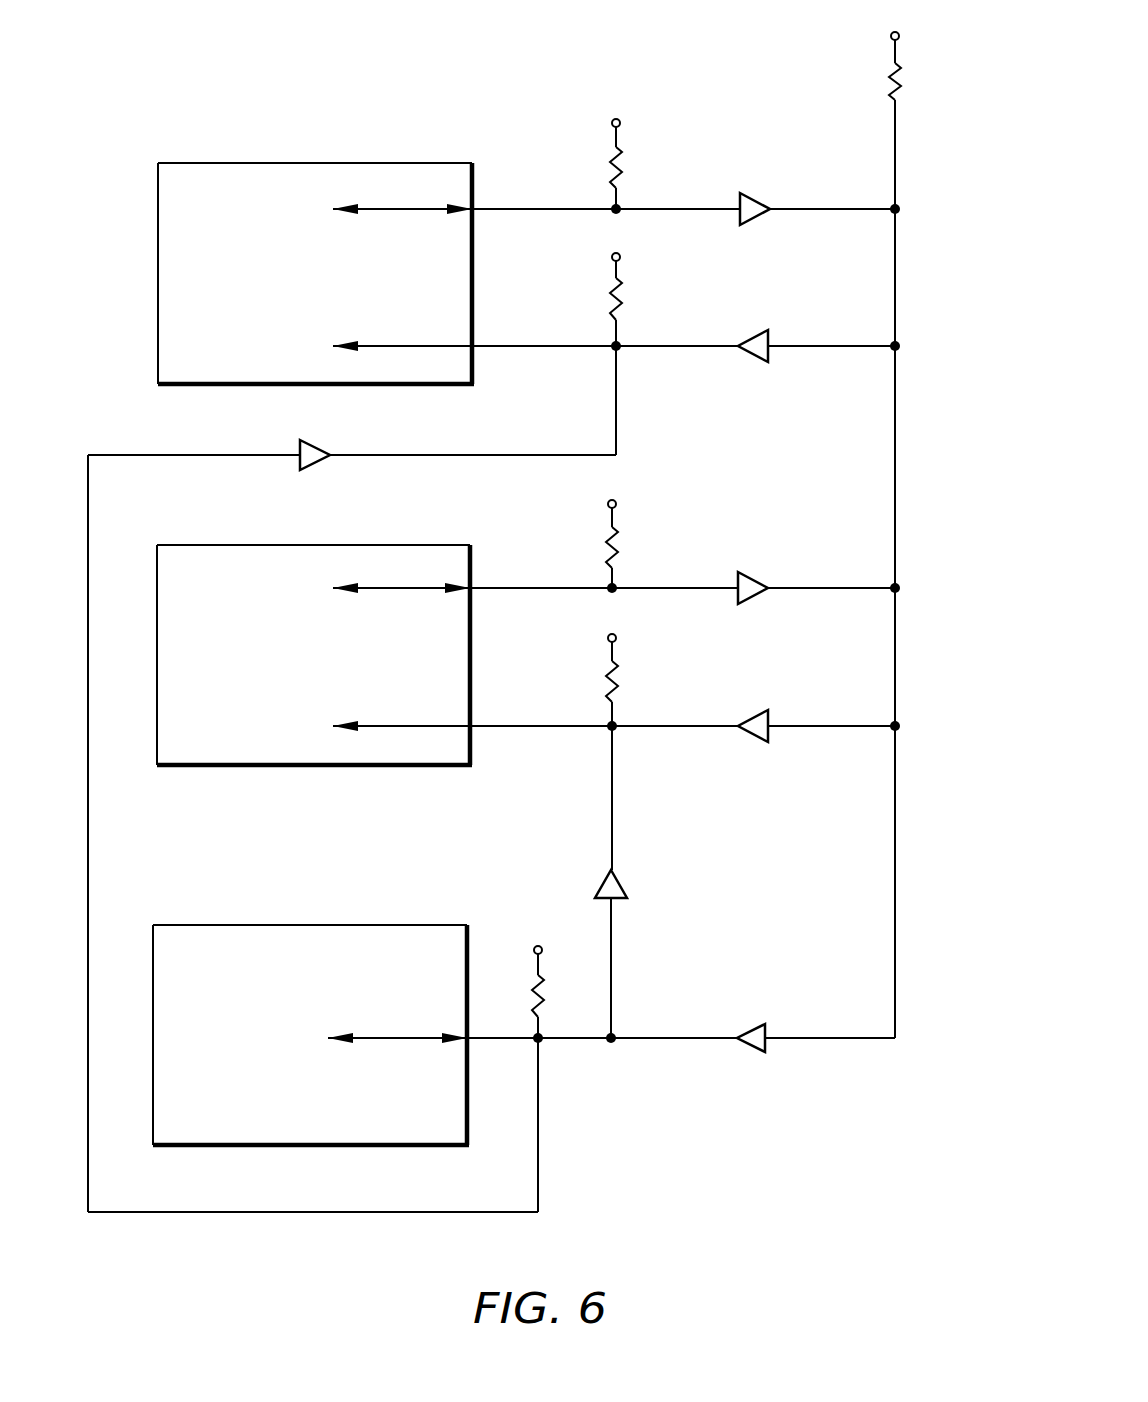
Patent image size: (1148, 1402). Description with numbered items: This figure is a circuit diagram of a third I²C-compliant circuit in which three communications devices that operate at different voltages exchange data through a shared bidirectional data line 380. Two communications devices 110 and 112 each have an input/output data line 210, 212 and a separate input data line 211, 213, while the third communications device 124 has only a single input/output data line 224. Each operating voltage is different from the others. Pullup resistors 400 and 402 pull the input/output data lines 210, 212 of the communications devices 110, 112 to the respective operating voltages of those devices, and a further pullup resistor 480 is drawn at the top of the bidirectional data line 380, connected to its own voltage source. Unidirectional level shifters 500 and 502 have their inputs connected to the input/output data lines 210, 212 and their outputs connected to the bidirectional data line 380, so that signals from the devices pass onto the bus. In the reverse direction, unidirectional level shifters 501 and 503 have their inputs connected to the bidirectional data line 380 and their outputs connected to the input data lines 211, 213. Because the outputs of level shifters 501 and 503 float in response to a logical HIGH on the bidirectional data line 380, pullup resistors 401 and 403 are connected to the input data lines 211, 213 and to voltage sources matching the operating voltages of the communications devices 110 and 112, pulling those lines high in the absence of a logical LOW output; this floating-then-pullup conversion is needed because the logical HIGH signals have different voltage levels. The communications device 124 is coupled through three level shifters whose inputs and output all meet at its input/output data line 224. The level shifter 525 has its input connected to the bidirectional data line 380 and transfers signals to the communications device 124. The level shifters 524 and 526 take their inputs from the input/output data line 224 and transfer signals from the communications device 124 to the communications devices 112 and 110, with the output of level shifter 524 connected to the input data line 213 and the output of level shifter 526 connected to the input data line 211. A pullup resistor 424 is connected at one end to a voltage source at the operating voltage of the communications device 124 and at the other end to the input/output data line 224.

The communications device 110 is at (420, 163).
The communications device 112 is at (420, 541).
The communications device 124 is at (423, 923).
The input/output data line 210 is at (477, 207).
The input data line 211 is at (477, 344).
The input/output data line 212 is at (477, 588).
The input data line 213 is at (477, 724).
The input/output data line 224 is at (468, 1033).
The bidirectional data line 380 is at (897, 145).
The pullup resistor 400 is at (614, 163).
The pullup resistor 401 is at (614, 298).
The pullup resistor 402 is at (606, 546).
The pullup resistor 403 is at (604, 684).
The pullup resistor 424 is at (540, 997).
The pull-up resistor 480 is at (898, 80).
The unidirectional level shifter 500 is at (752, 196).
The unidirectional level shifter 501 is at (756, 333).
The unidirectional level shifter 502 is at (752, 576).
The unidirectional level shifter 503 is at (756, 715).
The level shifter 524 is at (620, 887).
The level shifter 525 is at (751, 1028).
The level shifter 526 is at (302, 440).